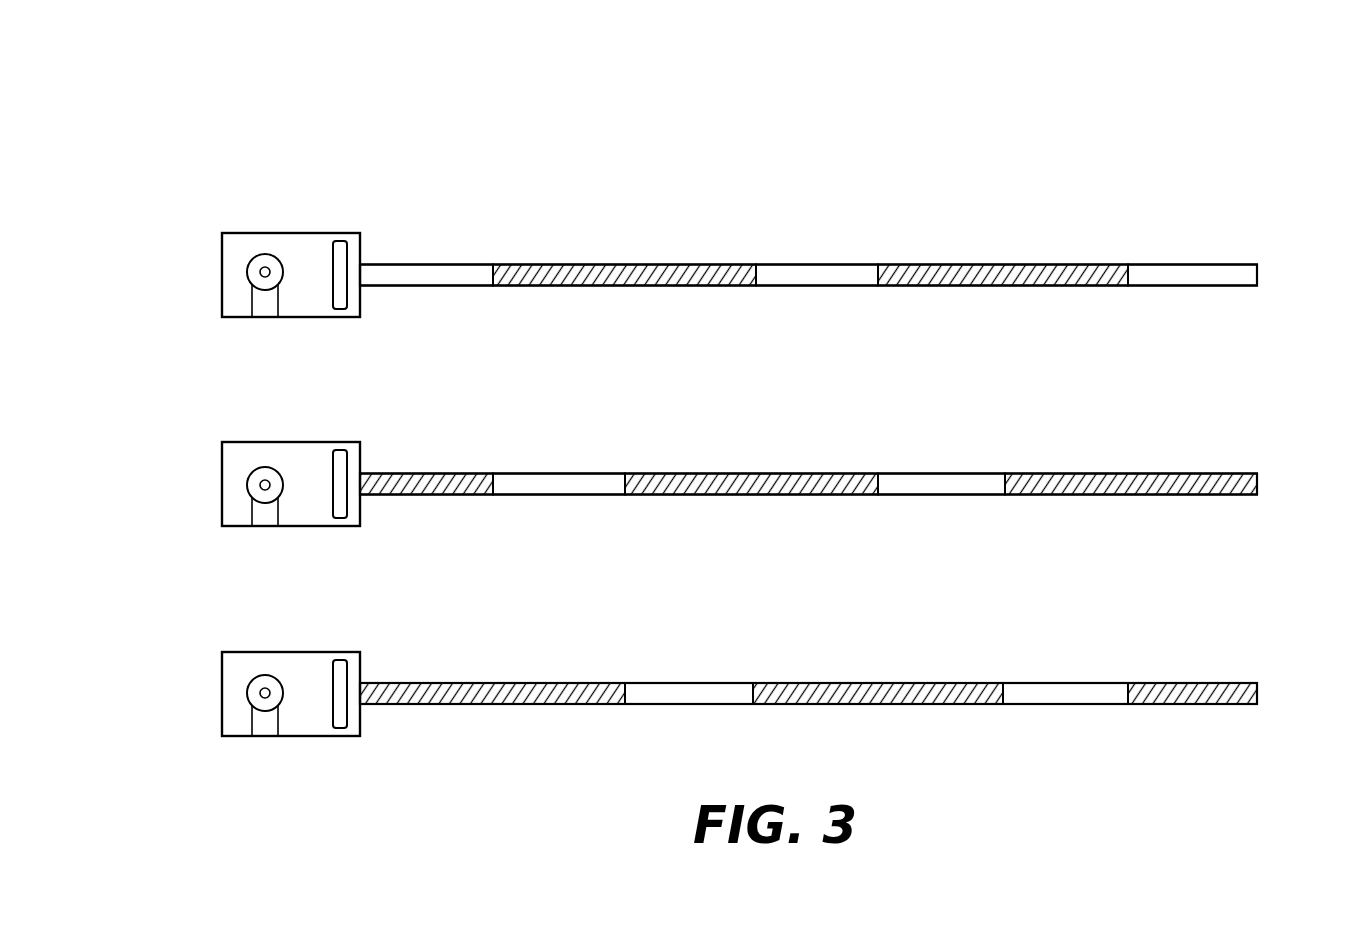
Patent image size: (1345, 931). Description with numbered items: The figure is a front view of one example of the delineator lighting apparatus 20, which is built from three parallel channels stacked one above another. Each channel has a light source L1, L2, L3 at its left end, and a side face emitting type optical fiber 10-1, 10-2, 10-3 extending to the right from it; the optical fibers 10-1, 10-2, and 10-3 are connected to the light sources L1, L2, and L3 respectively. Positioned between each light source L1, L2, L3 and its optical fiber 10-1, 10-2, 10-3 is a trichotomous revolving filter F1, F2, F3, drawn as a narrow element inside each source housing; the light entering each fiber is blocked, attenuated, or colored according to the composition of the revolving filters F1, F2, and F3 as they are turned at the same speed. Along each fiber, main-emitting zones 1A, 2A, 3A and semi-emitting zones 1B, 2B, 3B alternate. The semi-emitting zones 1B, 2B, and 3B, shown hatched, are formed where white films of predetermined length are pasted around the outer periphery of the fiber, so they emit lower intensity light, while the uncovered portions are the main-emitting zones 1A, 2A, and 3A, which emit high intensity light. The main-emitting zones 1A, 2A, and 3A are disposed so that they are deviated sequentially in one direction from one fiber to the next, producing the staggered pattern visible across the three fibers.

The delineator lighting apparatus 20 is at (286, 124).
The side face emitting type optical fiber 10-1 is at (1246, 246).
The side face emitting type optical fiber 10-2 is at (1242, 455).
The side face emitting type optical fiber 10-3 is at (1242, 667).
The light source L1 is at (250, 271).
The light source L2 is at (250, 485).
The light source L3 is at (250, 694).
The trichotomous revolving filter F1 is at (340, 246).
The trichotomous revolving filter F2 is at (340, 455).
The trichotomous revolving filter F3 is at (340, 665).
The main-emitting zone 1A is at (455, 268).
The semi-emitting zone 1B is at (640, 285).
The main-emitting zone 2A is at (570, 477).
The semi-emitting zone 2B is at (446, 494).
The main-emitting zone 3A is at (686, 686).
The semi-emitting zone 3B is at (522, 704).